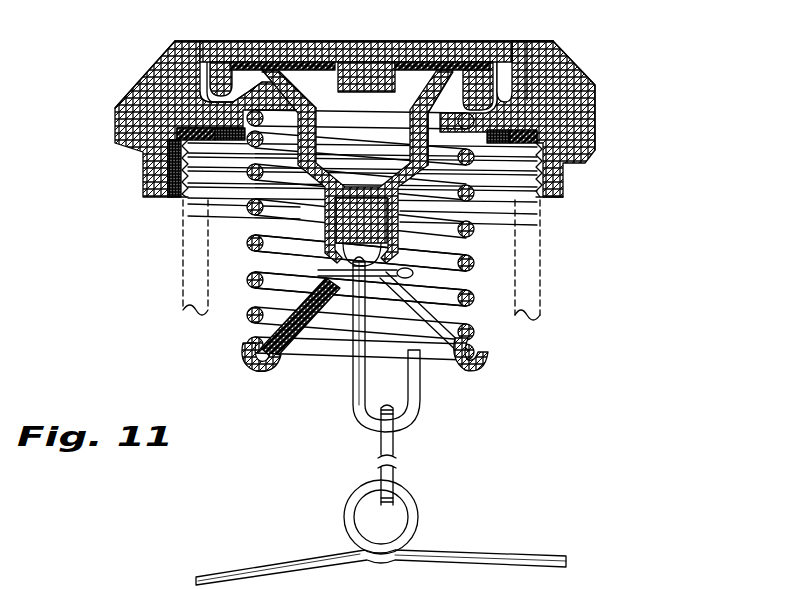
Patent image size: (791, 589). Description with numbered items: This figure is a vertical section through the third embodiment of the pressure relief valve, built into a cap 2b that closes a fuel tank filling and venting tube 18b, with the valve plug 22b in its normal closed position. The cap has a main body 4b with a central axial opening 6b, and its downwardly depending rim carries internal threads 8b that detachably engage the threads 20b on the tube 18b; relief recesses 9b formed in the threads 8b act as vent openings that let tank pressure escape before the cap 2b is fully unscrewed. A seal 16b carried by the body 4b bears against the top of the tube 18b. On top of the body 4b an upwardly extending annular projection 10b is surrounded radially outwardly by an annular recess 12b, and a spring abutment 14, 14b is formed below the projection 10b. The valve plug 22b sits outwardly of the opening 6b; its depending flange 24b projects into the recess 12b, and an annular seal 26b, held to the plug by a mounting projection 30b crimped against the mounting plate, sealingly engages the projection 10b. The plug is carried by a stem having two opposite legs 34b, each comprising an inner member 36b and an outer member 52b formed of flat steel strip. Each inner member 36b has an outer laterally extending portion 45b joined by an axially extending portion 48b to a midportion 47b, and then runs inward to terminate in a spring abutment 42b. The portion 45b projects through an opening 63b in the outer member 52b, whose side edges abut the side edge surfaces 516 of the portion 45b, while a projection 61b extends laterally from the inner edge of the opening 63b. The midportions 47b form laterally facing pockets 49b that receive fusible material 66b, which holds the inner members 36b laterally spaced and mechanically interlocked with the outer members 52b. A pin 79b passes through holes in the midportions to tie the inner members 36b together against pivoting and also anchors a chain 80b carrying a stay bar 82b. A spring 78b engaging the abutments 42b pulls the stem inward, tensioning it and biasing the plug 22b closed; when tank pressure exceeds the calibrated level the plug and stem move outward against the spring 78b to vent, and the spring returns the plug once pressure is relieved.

The cap 2b is at (605, 86).
The main body 4b is at (602, 103).
The central axial opening 6b is at (226, 40).
The internal threads 8b is at (567, 165).
The relief recesses 9b is at (180, 150).
The annular projection 10b is at (545, 48).
The annular recess 12b is at (183, 42).
The spring abutment 14b is at (645, 64).
The spring abutment 14 is at (125, 180).
The seal 16b is at (215, 133).
The tank filling and venting tube 18b is at (543, 284).
The threads 20b is at (556, 207).
The valve plug 22b is at (472, 70).
The flange 24b is at (560, 62).
The annular seal 26b is at (250, 96).
The mounting projection 30b is at (375, 72).
The legs 34b is at (298, 300).
The inner member 36b is at (311, 345).
The spring abutment 42b is at (246, 365).
The laterally extending portion 45b is at (283, 84).
The midportion 47b is at (250, 230).
The axially extending portion 48b is at (398, 130).
The pocket 49b is at (400, 241).
The outer member 52b is at (593, 114).
The projection 61b is at (270, 66).
The opening 63b is at (426, 80).
The fusible material 66b is at (413, 273).
The spring 78b is at (478, 341).
The pin 79b is at (247, 266).
The chain 80b is at (408, 513).
The stay bar 82b is at (495, 556).
The side edge surfaces 516 is at (340, 80).